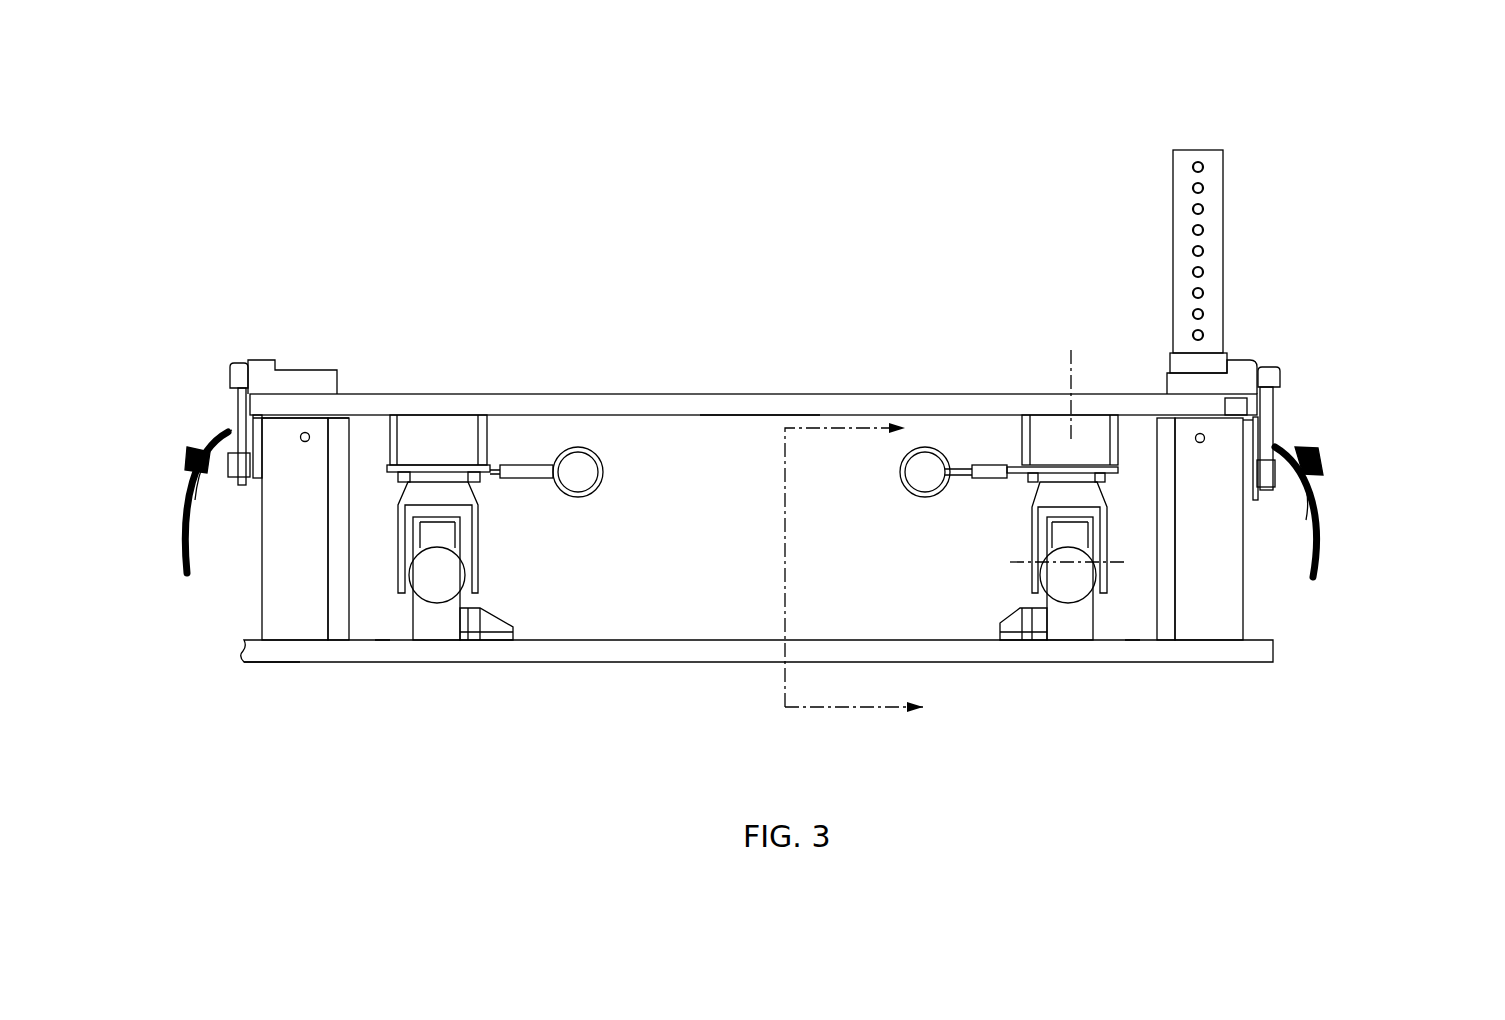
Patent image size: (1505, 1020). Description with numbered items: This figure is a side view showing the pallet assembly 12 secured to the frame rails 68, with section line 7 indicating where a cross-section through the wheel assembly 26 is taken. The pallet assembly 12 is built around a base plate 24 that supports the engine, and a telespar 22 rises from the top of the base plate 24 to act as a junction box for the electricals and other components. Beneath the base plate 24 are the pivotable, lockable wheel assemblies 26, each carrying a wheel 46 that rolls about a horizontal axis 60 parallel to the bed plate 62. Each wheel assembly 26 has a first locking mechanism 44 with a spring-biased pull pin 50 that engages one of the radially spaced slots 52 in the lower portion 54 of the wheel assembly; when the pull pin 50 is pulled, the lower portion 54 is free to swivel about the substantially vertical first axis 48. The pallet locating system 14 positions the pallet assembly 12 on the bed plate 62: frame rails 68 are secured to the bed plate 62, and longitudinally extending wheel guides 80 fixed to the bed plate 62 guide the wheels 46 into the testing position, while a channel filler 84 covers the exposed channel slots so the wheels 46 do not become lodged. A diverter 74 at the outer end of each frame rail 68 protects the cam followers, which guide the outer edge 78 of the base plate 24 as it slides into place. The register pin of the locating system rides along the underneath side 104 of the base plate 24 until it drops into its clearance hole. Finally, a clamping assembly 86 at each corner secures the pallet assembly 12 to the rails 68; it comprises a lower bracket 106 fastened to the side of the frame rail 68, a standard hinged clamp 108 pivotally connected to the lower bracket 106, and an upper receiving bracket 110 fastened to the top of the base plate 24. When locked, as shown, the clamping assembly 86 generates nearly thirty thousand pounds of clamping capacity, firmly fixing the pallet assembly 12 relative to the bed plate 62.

The pallet assembly 12 is at (878, 318).
The pallet locating system 14 is at (260, 693).
The telespar 22 is at (1223, 152).
The base plate 24 is at (713, 393).
The wheel assembly 26 is at (495, 535).
The first locking mechanism 44 is at (900, 467).
The wheel 46 is at (1060, 617).
The first axis 48 is at (1070, 373).
The pull pin 50 is at (605, 468).
The radially spaced slots 52 is at (480, 475).
The lower portion of the wheel assembly 54 is at (475, 560).
The horizontal axis 60 is at (1010, 562).
The bed plate 62 is at (725, 642).
The frame rail 68 is at (320, 546).
The diverter 74 is at (1277, 380).
The outer edge of the base plate 78 is at (1237, 407).
The wheel guide 80 is at (478, 640).
The channel filler 84 is at (382, 642).
The clamping assembly 86 is at (217, 418).
The underneath side of base plate 104 is at (760, 418).
The lower bracket 106 is at (1257, 493).
The hinged clamp 108 is at (1323, 520).
The upper receiving bracket 110 is at (1253, 360).
The section line 7- 7 is at (875, 577).